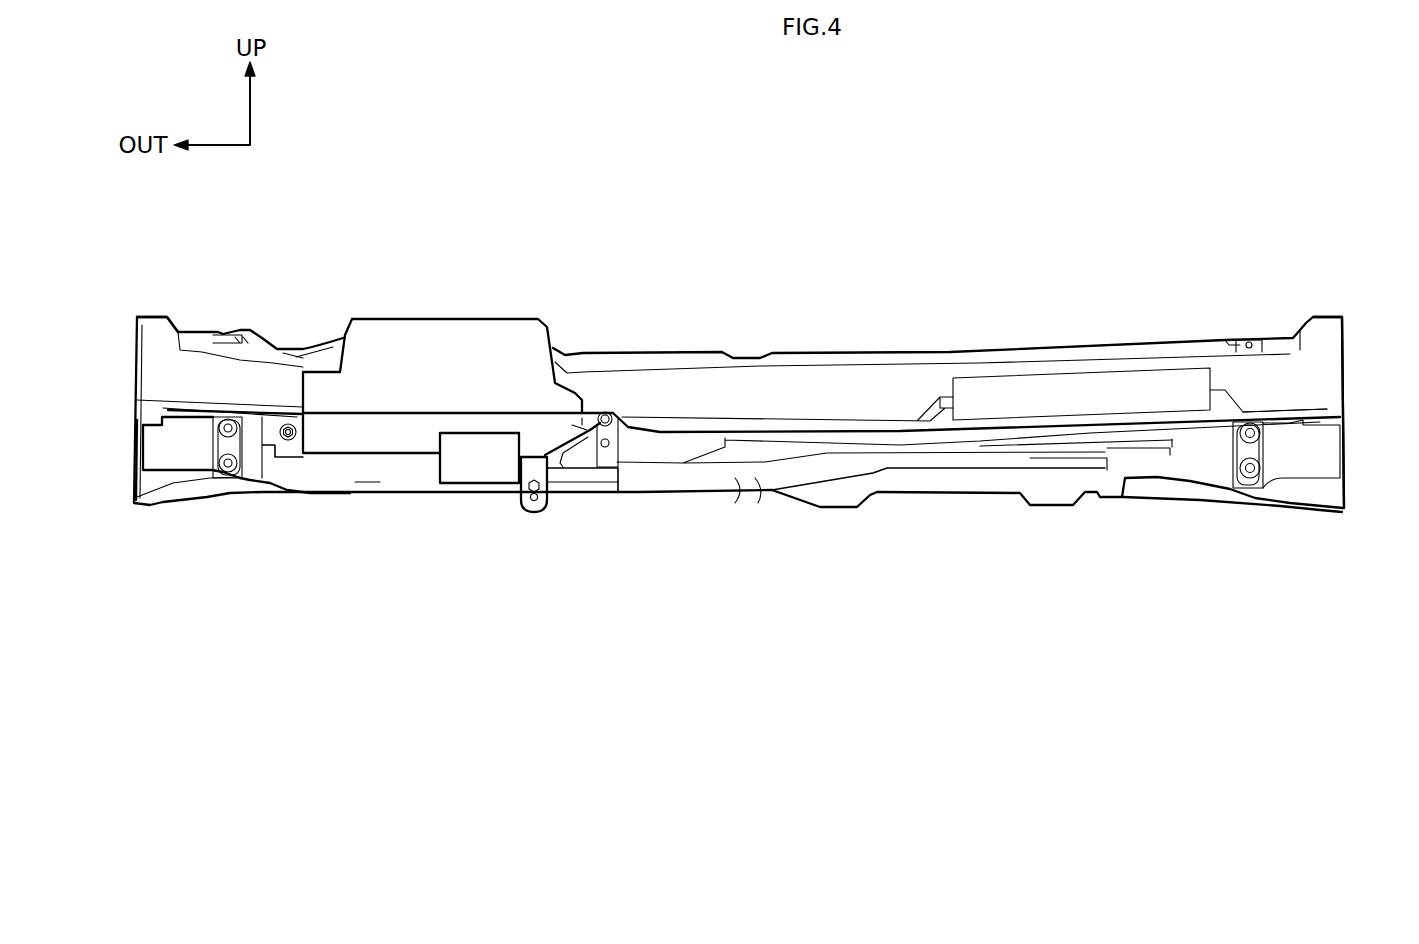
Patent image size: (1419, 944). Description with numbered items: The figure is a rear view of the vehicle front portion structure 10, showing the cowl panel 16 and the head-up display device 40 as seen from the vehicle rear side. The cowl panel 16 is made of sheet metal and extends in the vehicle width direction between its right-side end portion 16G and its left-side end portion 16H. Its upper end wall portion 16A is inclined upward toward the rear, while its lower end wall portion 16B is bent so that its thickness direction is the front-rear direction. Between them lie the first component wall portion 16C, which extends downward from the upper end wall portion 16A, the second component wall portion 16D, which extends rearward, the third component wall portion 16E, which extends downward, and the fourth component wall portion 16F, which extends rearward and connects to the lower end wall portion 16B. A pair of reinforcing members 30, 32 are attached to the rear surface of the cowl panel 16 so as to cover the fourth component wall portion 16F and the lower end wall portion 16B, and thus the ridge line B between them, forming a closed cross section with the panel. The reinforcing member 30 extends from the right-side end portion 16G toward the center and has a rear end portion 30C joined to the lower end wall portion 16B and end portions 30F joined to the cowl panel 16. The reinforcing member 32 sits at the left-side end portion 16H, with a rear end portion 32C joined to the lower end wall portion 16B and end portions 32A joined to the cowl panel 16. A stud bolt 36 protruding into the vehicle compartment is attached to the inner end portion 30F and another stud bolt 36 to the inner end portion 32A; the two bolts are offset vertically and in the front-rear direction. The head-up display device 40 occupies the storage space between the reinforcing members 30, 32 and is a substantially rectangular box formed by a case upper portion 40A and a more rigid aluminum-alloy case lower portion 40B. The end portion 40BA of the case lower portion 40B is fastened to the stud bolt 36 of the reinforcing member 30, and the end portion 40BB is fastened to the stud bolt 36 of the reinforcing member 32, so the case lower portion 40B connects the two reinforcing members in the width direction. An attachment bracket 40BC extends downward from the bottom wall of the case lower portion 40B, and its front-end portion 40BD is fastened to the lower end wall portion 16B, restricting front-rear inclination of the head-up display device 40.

The vehicle lower structure 10 is at (1136, 140).
The cowl panel 16 is at (918, 350).
The upper end wall portion 16A is at (822, 362).
The lower end wall portion 16B is at (613, 490).
The first component wall portion 16C is at (750, 397).
The second component wall portion 16D is at (833, 425).
The third component wall portion 16E is at (1322, 410).
The fourth component wall portion 16F is at (437, 470).
The end portion on the right side in the vehicle width direction 16G is at (1345, 405).
The end portion on the left side in the vehicle width direction 16H is at (145, 393).
The reinforcing member 30 is at (770, 478).
The rear end portion 30C is at (740, 478).
The end portion 30F is at (583, 470).
The reinforcing member 32 is at (170, 470).
The end portion 32A is at (135, 455).
The rear end portion 32C is at (207, 475).
The stud bolt 36 is at (288, 425).
The head-up display device 40 is at (490, 312).
The case upper portion 40A is at (385, 345).
The case lower portion 40B is at (400, 445).
The end portion 40BA is at (586, 470).
The end portion 40BB is at (287, 448).
The attachment bracket 40BC is at (500, 472).
The front-end portion 40BD is at (536, 515).
The ridge line B is at (365, 470).